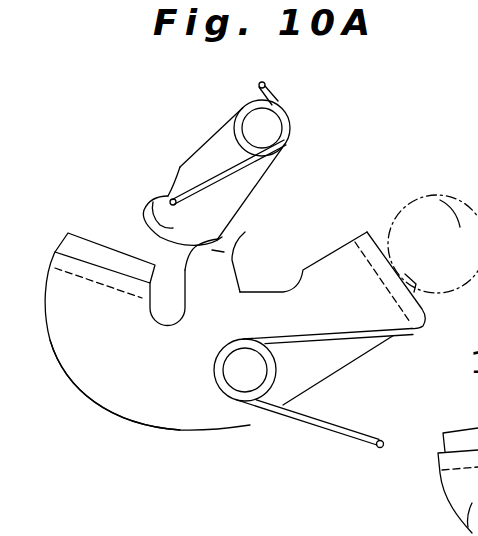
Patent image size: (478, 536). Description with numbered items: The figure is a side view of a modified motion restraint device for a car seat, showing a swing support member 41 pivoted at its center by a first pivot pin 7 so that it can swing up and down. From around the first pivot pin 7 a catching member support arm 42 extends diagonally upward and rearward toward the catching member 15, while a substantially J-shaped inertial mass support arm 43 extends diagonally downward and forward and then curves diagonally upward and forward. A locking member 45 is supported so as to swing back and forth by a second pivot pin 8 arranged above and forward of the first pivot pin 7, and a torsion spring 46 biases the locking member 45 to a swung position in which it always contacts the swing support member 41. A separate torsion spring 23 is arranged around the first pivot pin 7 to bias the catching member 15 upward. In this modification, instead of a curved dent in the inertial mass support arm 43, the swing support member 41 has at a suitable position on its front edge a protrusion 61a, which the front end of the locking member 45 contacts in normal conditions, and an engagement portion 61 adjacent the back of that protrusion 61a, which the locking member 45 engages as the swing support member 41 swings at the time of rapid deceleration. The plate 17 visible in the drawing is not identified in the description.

The first pivot pin 7 is at (247, 373).
The second pivot pin 8 is at (264, 128).
The catching member 15 is at (440, 197).
The mounting plate 17 is at (92, 250).
The torsion spring 23 is at (330, 432).
The swing support member 41 is at (187, 431).
The catching member support arm 42 is at (345, 352).
The inertial mass support arm 43 is at (53, 337).
The locking member 45 is at (154, 203).
The torsion spring 46 is at (230, 175).
The engagement portion 61 is at (253, 292).
The protrusion 61a is at (237, 237).